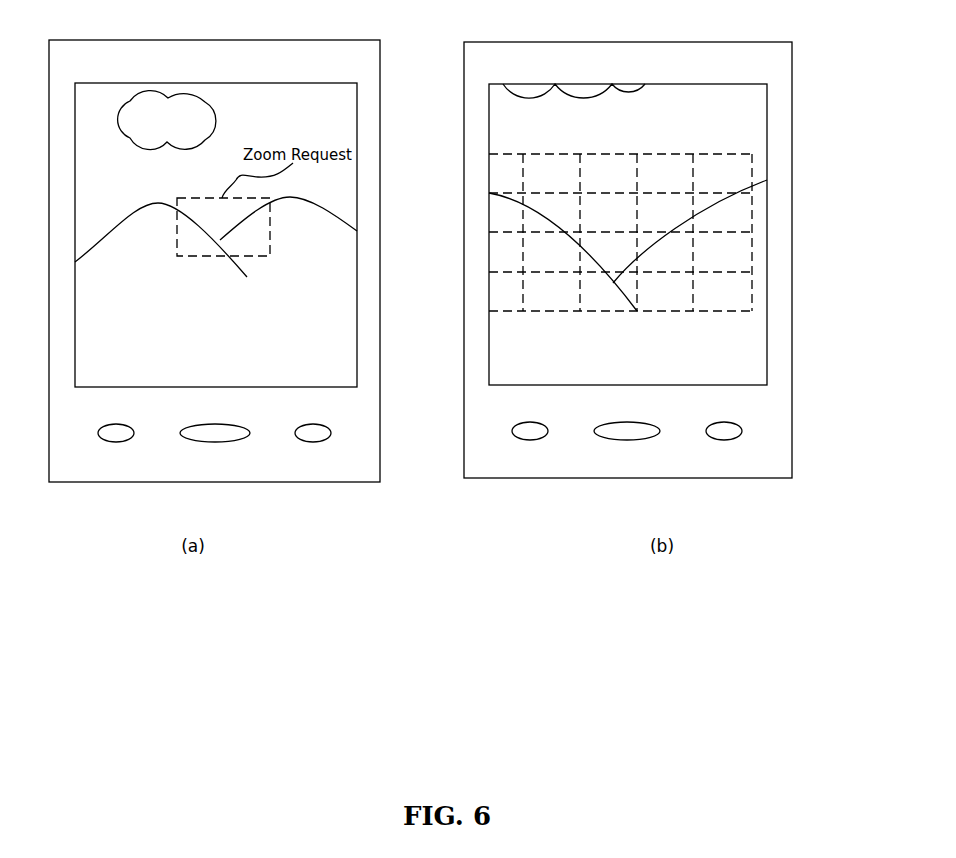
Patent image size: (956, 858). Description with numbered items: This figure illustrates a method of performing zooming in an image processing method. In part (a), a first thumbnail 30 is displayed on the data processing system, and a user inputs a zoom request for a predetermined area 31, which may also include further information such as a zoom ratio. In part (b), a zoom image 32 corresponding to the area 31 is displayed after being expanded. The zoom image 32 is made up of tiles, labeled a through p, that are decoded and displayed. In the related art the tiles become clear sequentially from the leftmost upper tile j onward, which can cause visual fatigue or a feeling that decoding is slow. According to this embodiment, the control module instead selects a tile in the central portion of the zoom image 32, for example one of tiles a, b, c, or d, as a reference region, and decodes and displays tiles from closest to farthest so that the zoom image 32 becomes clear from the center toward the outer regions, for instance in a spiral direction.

The first thumbnail 30 is at (357, 201).
The area 31 is at (270, 227).
The zoom image 32 is at (752, 162).